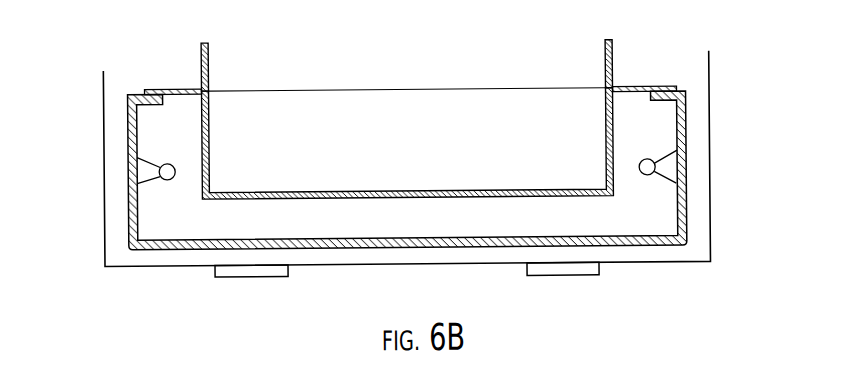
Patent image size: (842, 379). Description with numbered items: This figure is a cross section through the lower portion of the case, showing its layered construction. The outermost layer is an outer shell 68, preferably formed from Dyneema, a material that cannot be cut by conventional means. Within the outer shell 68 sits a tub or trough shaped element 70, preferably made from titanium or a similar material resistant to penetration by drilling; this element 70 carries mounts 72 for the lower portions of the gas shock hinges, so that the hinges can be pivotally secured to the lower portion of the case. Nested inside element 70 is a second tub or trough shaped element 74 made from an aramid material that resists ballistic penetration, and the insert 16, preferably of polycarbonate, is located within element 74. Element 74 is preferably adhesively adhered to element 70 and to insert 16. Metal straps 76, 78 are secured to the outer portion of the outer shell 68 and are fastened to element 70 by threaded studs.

The insert 16 is at (616, 67).
The outer shell 68 is at (711, 149).
The tub or trough shaped element 70 is at (685, 120).
The mounts 72 is at (144, 173).
The tub or trough shaped element 74 is at (618, 127).
The metal strap 76 is at (252, 280).
The metal strap 78 is at (560, 280).